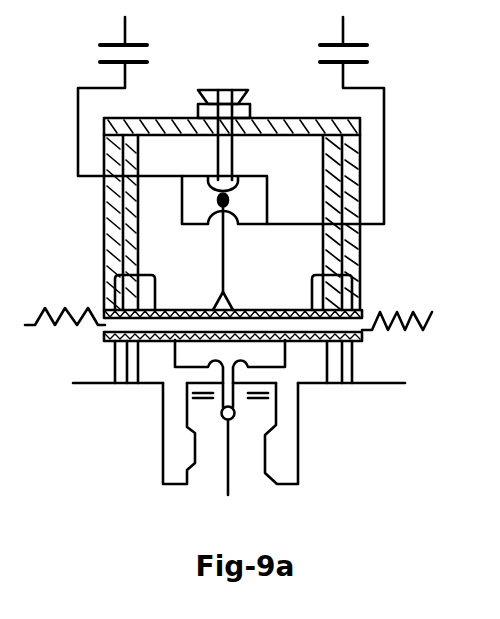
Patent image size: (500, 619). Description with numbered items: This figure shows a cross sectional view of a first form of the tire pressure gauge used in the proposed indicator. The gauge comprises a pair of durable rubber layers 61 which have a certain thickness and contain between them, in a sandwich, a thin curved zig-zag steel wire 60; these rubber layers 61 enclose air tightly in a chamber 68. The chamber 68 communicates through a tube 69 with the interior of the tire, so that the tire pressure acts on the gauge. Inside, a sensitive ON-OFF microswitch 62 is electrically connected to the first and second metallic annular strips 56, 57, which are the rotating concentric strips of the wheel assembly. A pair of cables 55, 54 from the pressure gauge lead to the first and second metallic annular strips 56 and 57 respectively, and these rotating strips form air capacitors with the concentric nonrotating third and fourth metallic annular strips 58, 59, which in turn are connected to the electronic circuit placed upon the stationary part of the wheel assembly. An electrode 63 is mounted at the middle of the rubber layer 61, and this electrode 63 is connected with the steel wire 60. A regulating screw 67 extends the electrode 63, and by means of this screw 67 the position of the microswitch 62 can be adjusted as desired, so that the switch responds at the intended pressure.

The cable 54 is at (384, 157).
The cable 55 is at (78, 127).
The first metallic annular strip 56 is at (107, 63).
The second metallic annular strip 57 is at (363, 62).
The third metallic annular strip 58 is at (120, 44).
The fourth metallic annular strip 59 is at (365, 43).
The zig-zag steel wire 60 is at (432, 312).
The rubber layers 61 is at (360, 314).
The microswitch 62 is at (267, 204).
The electrode 63 is at (223, 252).
The regulating screw 67 is at (223, 89).
The chamber 68 is at (288, 270).
The tube 69 is at (228, 495).